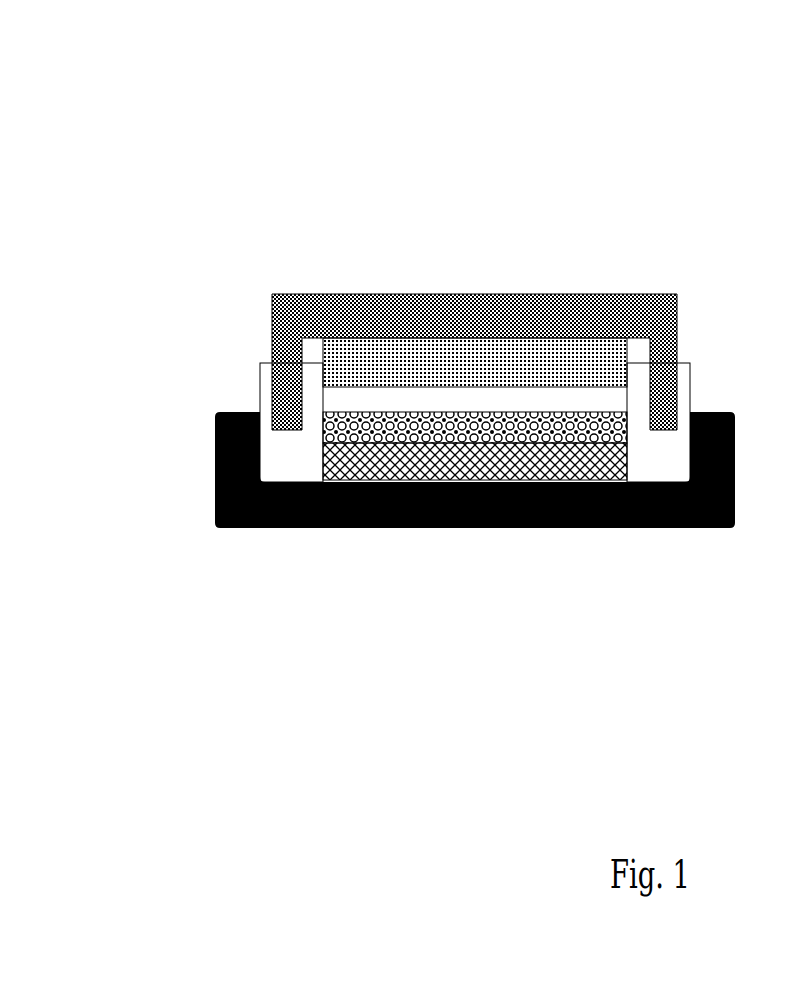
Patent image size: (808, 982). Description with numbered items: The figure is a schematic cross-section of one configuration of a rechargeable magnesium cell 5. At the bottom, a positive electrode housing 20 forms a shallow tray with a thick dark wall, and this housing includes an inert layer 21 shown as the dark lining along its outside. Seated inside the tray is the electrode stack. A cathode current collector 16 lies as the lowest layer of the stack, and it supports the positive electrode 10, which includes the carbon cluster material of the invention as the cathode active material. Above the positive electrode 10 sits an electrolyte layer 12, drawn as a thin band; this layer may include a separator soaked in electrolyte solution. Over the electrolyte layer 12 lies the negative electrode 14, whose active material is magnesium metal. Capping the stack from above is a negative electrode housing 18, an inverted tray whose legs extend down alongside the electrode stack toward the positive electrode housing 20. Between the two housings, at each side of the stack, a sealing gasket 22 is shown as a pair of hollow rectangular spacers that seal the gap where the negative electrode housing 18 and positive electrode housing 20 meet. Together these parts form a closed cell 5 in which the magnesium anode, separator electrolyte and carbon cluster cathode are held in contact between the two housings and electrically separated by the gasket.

The rechargeable magnesium cell 5 is at (547, 153).
The positive electrode 10 is at (598, 447).
The electrolyte layer 12 is at (316, 379).
The negative electrode 14 is at (604, 360).
The cathode current collector 16 is at (314, 483).
The negative electrode housing 18 is at (465, 288).
The positive electrode housing 20 is at (230, 463).
The inert layer 21 is at (213, 542).
The sealing gasket 22 is at (669, 437).